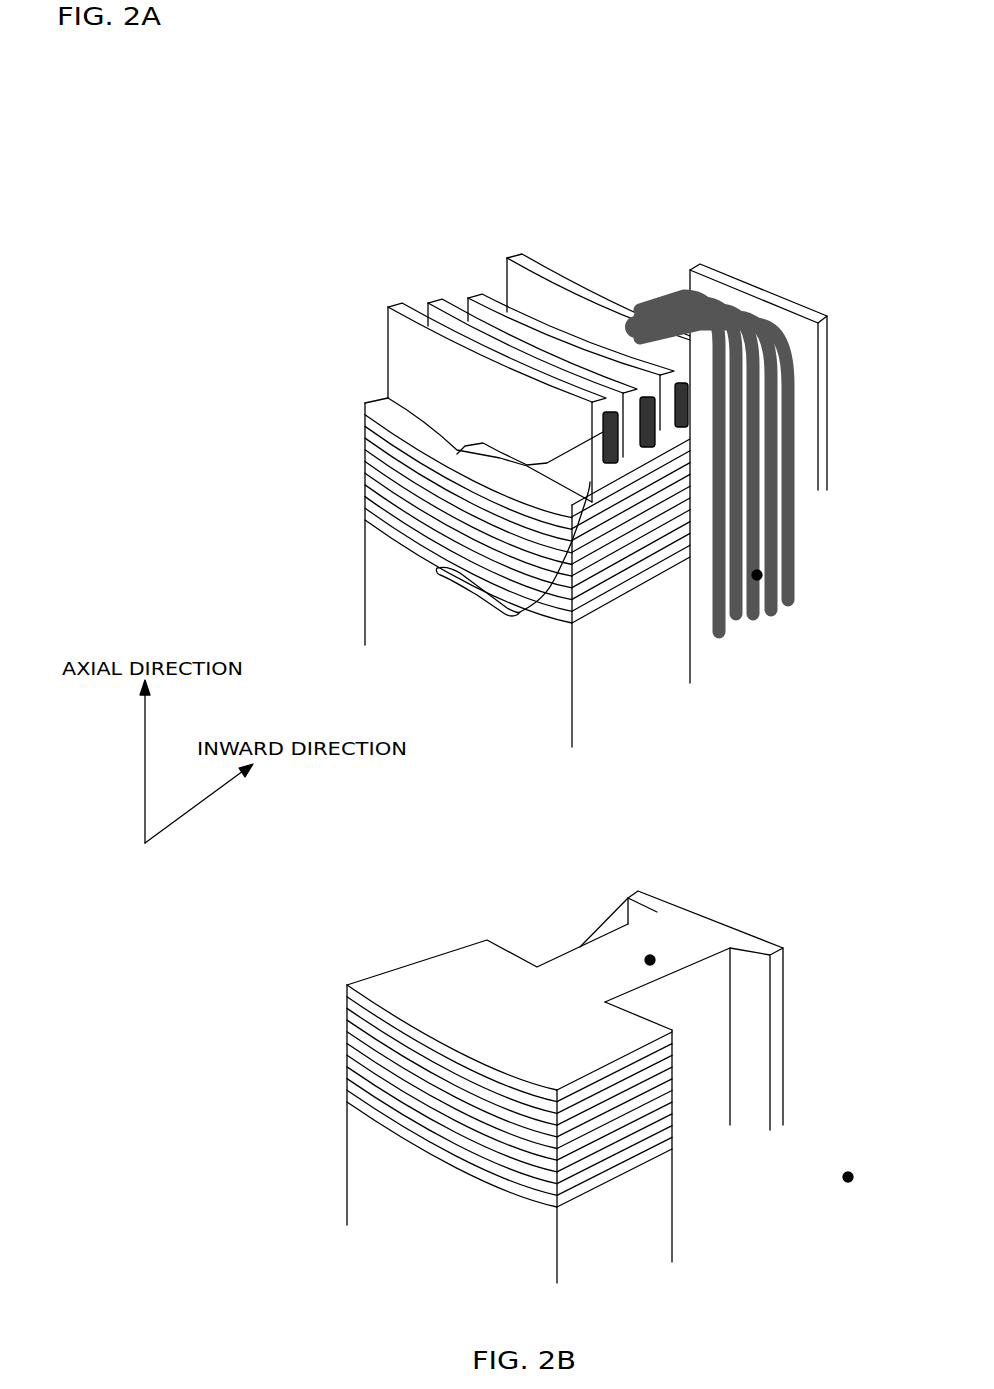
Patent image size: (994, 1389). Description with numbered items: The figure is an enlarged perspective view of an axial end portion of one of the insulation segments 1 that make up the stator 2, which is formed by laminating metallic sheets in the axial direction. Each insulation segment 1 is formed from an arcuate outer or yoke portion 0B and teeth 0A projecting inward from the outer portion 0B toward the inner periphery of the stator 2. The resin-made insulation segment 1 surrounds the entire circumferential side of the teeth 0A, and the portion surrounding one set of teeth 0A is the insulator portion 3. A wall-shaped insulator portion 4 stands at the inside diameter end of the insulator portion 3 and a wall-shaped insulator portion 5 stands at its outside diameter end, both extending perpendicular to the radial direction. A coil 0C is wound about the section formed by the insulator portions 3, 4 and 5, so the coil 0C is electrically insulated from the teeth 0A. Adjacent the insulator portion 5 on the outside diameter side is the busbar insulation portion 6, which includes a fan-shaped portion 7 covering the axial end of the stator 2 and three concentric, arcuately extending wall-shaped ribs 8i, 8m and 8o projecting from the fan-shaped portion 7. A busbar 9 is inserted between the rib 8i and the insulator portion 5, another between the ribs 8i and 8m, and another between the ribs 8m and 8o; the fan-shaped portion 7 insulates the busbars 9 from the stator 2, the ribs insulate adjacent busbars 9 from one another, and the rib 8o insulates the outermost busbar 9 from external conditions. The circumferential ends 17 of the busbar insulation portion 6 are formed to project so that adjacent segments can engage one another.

In FIG. 2A, the insulation segment 1 is at (722, 150).
In FIG. 2A, the stator 2 is at (356, 461).
In FIG. 2A, the insulator portion 3 is at (760, 343).
In FIG. 2A, the wall-shaped insulator portion 4 is at (712, 260).
In FIG. 2A, the wall-shaped insulator portion 5 is at (542, 253).
In FIG. 2A, the busbar insulation portion 6 is at (503, 183).
In FIG. 2A, the fan-shaped portion 7 is at (642, 477).
In FIG. 2A, the wall-shaped rib 8o is at (397, 286).
In FIG. 2A, the wall-shaped rib 8m is at (435, 285).
In FIG. 2A, the wall-shaped rib 8i is at (477, 278).
In FIG. 2A, the busbar 9 is at (457, 454).
In FIG. 2A, the circumferential end 17 is at (437, 568).
In FIG. 2B, the teeth 0A is at (650, 960).
In FIG. 2B, the outer portion 0B is at (535, 1038).
In FIG. 2A, the coil 0C is at (757, 575).